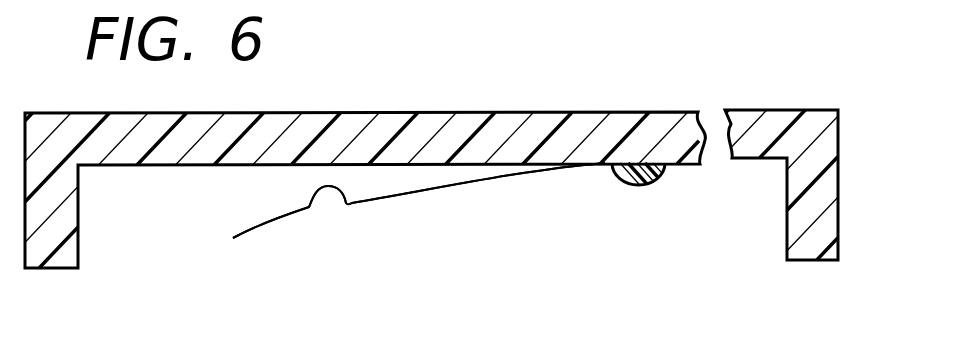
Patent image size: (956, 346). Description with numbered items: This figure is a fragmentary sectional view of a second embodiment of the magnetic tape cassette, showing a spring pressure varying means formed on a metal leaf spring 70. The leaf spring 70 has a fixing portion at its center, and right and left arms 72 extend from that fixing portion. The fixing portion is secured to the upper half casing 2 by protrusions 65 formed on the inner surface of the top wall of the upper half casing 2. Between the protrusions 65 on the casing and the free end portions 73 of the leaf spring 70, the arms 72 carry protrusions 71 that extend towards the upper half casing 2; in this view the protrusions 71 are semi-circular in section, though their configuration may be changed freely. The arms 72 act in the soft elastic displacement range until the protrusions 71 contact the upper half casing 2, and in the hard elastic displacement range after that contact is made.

The upper half casing 2 is at (553, 117).
The protrusions 65 is at (647, 186).
The leaf spring 70 is at (525, 172).
The protrusions 71 is at (330, 189).
The arms 72 is at (436, 185).
The free end portions 73 is at (238, 234).